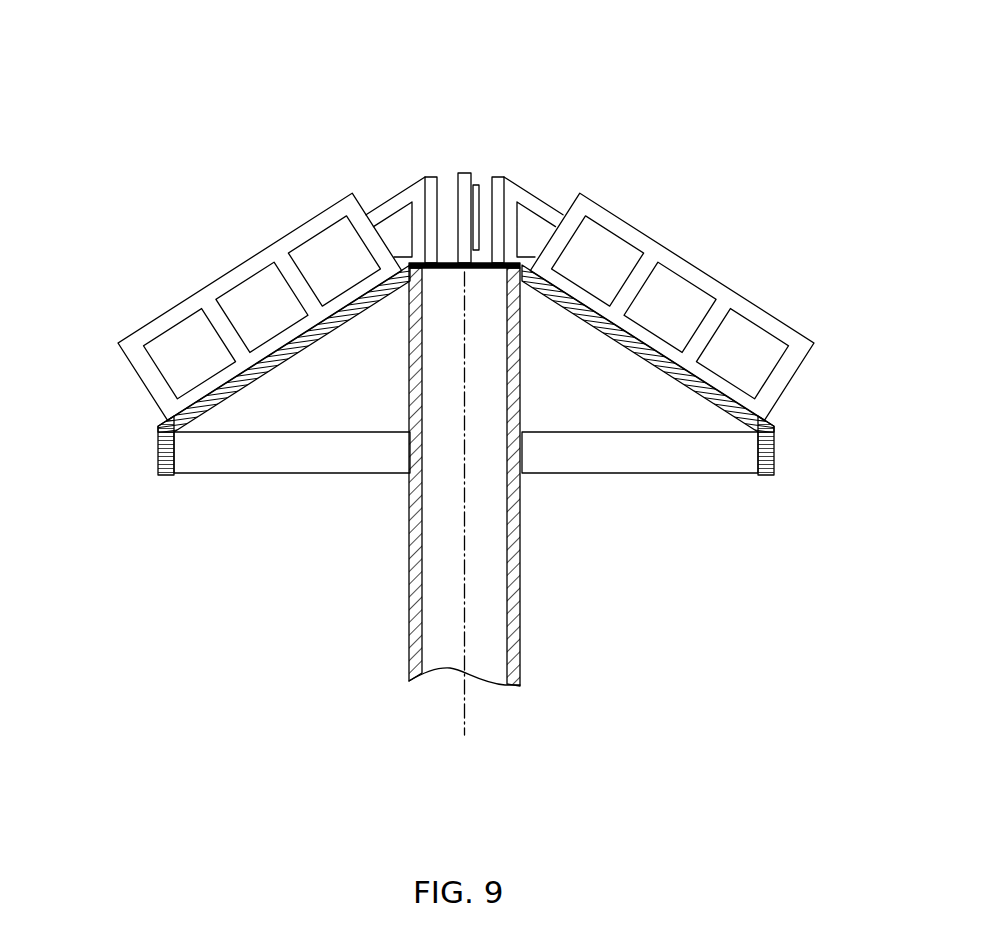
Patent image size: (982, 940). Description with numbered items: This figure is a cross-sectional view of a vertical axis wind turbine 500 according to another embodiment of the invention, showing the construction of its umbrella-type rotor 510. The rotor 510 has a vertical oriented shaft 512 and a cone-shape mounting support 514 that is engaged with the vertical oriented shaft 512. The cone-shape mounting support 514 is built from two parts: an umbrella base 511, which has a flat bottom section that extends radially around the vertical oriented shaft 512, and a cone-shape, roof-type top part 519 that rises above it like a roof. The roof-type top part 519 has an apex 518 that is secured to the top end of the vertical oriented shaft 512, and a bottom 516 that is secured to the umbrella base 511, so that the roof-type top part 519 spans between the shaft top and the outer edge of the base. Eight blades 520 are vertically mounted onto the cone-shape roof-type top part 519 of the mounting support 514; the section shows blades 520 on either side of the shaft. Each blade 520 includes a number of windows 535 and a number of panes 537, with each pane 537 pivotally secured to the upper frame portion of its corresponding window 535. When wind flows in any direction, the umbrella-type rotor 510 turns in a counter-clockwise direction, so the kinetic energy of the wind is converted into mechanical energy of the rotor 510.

The vertical axis wind turbine 500 is at (477, 37).
The rotor 510 is at (237, 418).
The umbrella base 511 is at (290, 455).
The vertical oriented shaft 512 is at (521, 577).
The cone-shape mounting support 514 is at (668, 377).
The bottom 516 is at (158, 462).
The apex 518 is at (485, 262).
The cone-shape roof-type top part 519 is at (303, 331).
The blade 520 is at (462, 172).
The window 535 is at (193, 353).
The pane 537 is at (474, 250).